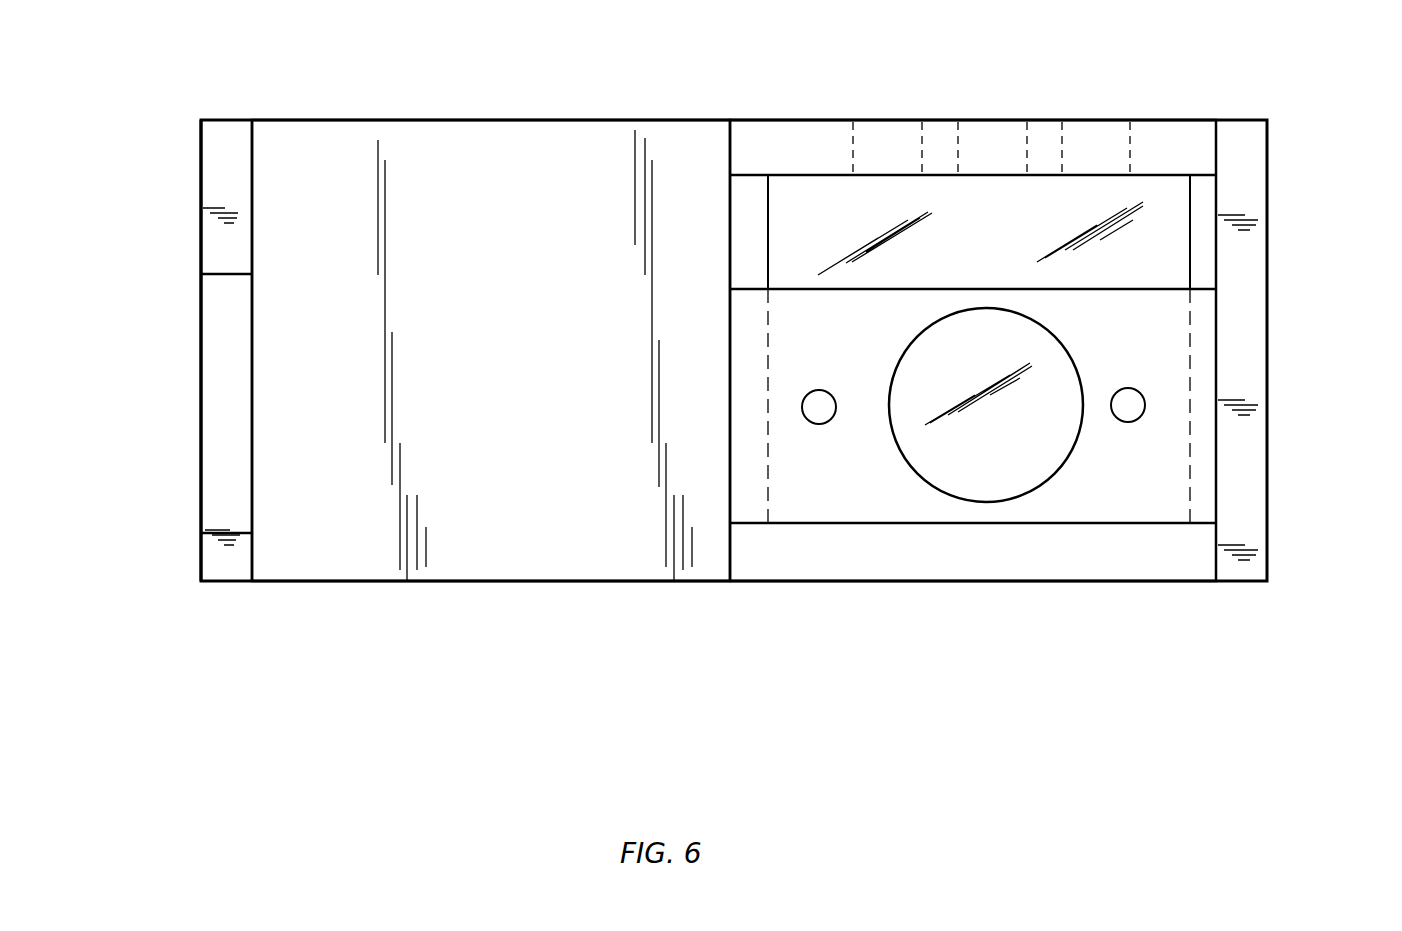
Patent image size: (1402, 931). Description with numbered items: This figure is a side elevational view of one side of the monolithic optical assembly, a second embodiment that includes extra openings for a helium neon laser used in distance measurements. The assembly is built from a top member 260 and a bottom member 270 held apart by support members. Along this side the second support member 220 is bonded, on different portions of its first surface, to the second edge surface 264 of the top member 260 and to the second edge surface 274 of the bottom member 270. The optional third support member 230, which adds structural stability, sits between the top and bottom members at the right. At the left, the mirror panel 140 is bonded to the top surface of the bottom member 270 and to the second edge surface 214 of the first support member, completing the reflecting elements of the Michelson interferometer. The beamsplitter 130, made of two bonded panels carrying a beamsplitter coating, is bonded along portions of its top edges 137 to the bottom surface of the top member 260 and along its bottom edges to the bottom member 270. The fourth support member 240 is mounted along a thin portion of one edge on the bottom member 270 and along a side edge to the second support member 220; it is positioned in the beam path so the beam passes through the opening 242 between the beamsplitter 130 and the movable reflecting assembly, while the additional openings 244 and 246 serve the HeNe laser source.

The beamsplitter 130 is at (1149, 198).
The top edges 137 is at (1105, 170).
The mirror panel 140 is at (201, 406).
The second edge surface 214 is at (220, 180).
The second support member 220 is at (329, 566).
The third support member 230 is at (1272, 121).
The fourth support member 240 is at (1125, 498).
The opening 242 is at (1026, 472).
The opening 244 is at (1136, 408).
The opening 246 is at (816, 408).
The top member 260 is at (780, 116).
The second edge surface 264 is at (755, 138).
The bottom member 270 is at (834, 585).
The second edge surface 274 is at (1008, 560).